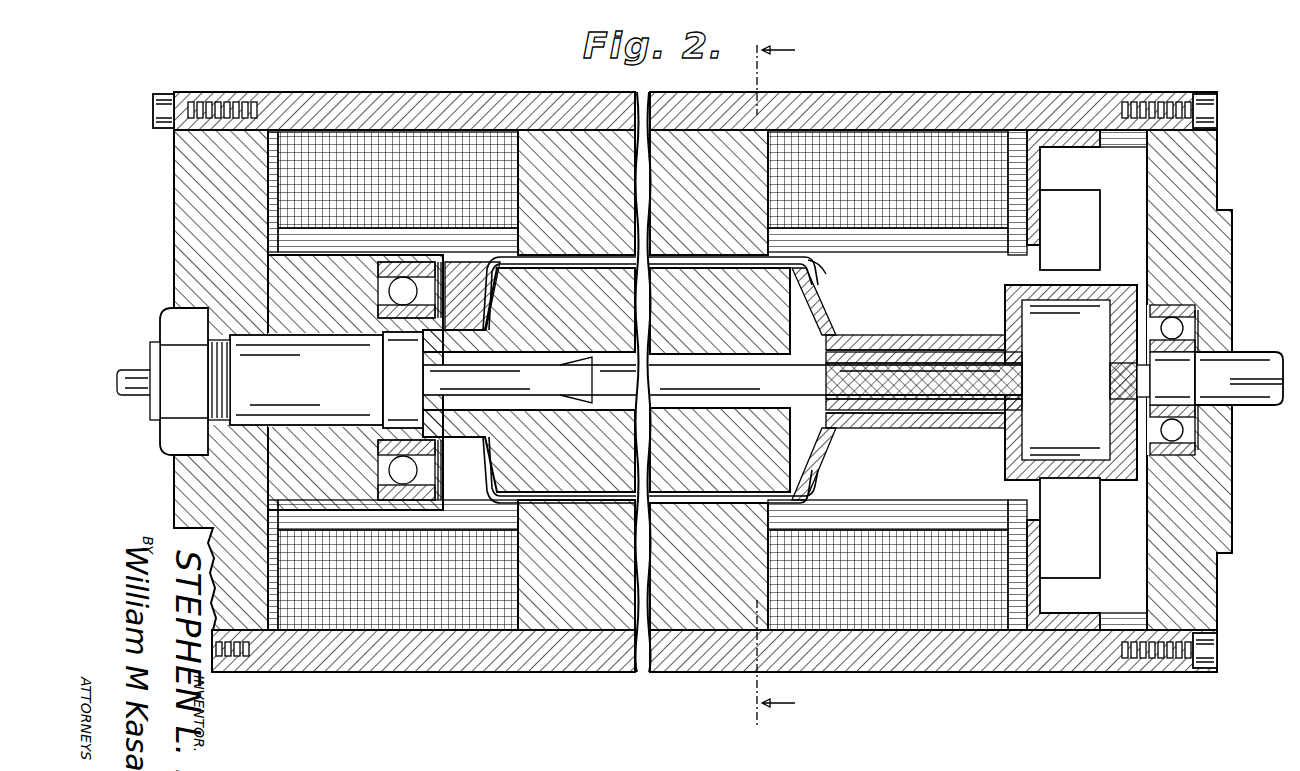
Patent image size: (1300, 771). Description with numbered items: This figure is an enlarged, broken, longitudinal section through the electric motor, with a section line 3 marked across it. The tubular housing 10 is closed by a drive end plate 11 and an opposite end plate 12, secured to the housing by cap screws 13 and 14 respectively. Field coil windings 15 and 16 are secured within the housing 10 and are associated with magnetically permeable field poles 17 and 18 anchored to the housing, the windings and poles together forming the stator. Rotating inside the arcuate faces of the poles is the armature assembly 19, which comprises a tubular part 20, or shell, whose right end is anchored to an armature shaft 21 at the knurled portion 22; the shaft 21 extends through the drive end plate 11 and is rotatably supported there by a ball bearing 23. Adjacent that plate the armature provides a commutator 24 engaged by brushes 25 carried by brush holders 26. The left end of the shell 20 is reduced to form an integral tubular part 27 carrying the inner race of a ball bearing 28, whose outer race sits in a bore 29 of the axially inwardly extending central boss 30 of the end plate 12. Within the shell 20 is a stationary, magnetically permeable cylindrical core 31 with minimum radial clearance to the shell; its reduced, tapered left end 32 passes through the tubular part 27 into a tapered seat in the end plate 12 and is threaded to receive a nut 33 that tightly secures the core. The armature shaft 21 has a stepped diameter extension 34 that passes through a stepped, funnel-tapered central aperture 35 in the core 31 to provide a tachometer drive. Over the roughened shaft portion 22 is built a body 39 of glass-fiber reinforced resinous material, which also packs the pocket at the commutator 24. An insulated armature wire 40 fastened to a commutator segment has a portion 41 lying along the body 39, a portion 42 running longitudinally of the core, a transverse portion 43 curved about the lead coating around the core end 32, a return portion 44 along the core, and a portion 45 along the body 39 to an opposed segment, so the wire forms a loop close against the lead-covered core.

The section line 3- 3 is at (790, 380).
The tubular housing 10 is at (455, 100).
The drive end plate 11 is at (1232, 192).
The opposite end plate 12 is at (185, 245).
The cap screws 13 is at (1218, 110).
The cap screws 14 is at (153, 108).
The field coil winding 15 is at (936, 150).
The field coil winding 16 is at (945, 602).
The field pole 17 is at (543, 150).
The field pole 18 is at (705, 600).
The armature assembly 19 is at (864, 332).
The tubular part 20 is at (818, 270).
The armature shaft 21 is at (1247, 362).
The armature shaft portion 22 is at (900, 386).
The ball bearing 23 is at (1180, 306).
The commutator 24 is at (1076, 296).
The brushes 25 is at (1052, 268).
The brush holders 26 is at (1035, 178).
The tubular part 27 is at (452, 305).
The ball bearing 28 is at (376, 292).
The bore 29 is at (426, 470).
The central boss 30 is at (338, 512).
The cylindrical core 31 is at (720, 380).
The left end of core 32 is at (345, 386).
The nut 33 is at (176, 432).
The stepped diameter extension 34 is at (720, 386).
The central aperture 35 is at (543, 348).
The body of glass-fiber reinforced resinous material 39 is at (964, 412).
The insulated armature wire 40 is at (820, 462).
The wire portion 41 is at (936, 402).
The wire portion 42 is at (575, 494).
The transversely extending wire portion 43 is at (485, 492).
The wire portion 44 is at (548, 262).
The wire portion 45 is at (922, 345).